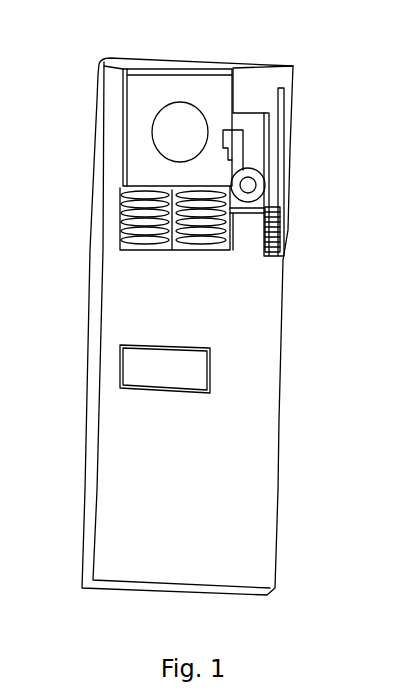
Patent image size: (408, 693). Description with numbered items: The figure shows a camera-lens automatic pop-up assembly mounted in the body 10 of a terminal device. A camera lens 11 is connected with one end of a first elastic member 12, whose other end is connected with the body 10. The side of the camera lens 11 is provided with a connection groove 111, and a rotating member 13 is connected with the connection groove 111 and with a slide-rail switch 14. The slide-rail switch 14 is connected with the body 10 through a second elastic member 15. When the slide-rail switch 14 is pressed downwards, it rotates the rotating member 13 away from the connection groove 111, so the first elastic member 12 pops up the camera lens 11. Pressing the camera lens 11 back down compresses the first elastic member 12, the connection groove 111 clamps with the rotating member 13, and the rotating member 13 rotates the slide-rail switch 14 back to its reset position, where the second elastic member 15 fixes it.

The body 10 is at (248, 458).
The camera lens 11 is at (158, 105).
The connection groove 111 is at (230, 137).
The first elastic member 12 is at (160, 222).
The rotating member 13 is at (238, 163).
The slide-rail switch 14 is at (272, 147).
The second elastic member 15 is at (278, 237).